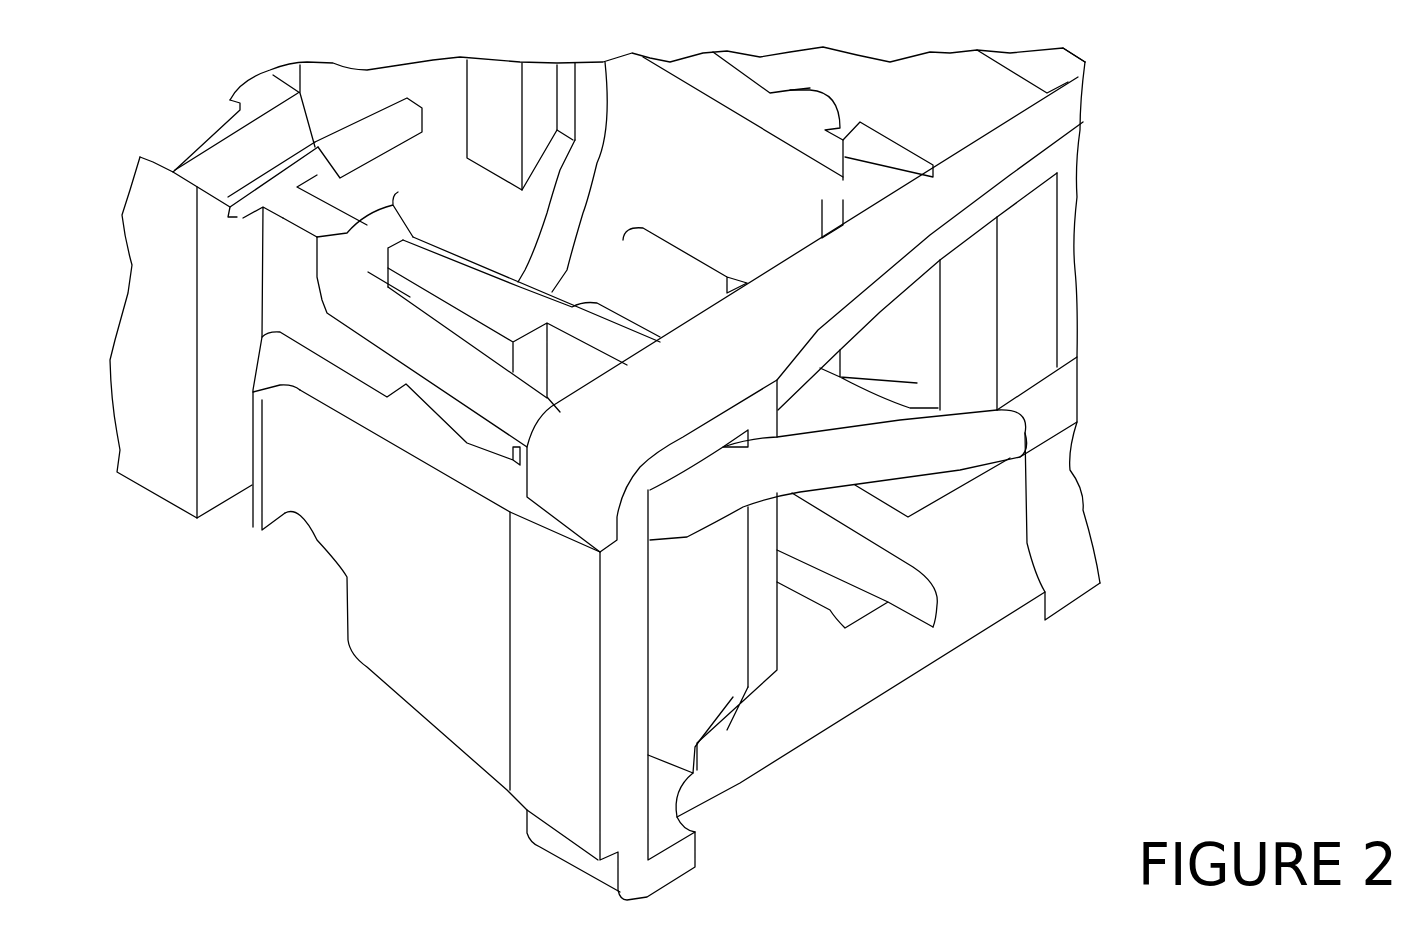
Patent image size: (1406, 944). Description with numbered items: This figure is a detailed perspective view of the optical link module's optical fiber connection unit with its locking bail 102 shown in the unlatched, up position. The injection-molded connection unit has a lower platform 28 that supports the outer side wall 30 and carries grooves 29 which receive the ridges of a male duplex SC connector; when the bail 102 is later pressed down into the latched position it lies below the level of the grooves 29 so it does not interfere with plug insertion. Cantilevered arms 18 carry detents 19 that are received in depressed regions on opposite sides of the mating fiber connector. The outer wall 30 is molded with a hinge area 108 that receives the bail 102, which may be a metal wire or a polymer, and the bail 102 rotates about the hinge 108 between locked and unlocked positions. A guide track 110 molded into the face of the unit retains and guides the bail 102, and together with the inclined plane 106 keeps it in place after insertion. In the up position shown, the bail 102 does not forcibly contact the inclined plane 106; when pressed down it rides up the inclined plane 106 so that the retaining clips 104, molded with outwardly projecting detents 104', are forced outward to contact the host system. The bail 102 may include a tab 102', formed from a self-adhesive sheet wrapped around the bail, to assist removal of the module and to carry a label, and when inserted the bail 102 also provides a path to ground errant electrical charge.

The cantilevered arms 18 is at (709, 172).
The detents 19 is at (842, 198).
The outer wall 30 is at (517, 317).
The hinge area 108 is at (327, 247).
The inclined plane 106 is at (407, 398).
The detents 104' is at (266, 482).
The retaining clips 104 is at (452, 641).
The bail 102 is at (863, 489).
The tab 102' is at (1073, 549).
The grooves 29 is at (883, 635).
The lower platform 28 is at (833, 702).
The guide track 110 is at (700, 687).